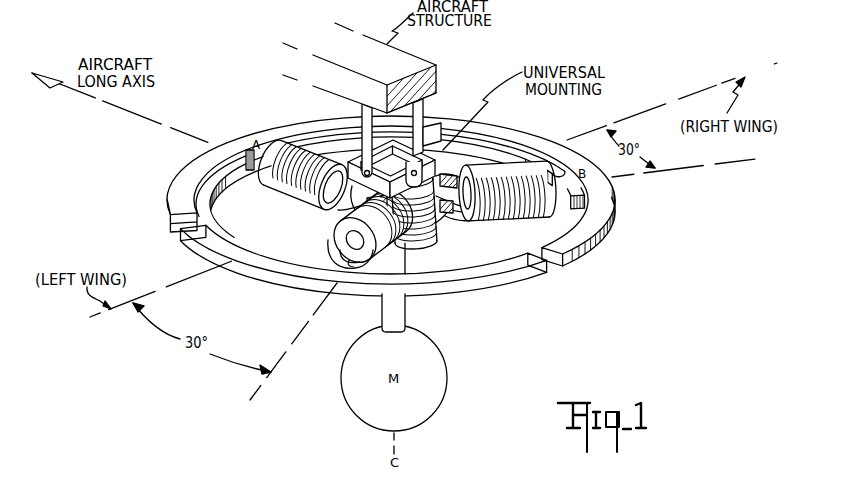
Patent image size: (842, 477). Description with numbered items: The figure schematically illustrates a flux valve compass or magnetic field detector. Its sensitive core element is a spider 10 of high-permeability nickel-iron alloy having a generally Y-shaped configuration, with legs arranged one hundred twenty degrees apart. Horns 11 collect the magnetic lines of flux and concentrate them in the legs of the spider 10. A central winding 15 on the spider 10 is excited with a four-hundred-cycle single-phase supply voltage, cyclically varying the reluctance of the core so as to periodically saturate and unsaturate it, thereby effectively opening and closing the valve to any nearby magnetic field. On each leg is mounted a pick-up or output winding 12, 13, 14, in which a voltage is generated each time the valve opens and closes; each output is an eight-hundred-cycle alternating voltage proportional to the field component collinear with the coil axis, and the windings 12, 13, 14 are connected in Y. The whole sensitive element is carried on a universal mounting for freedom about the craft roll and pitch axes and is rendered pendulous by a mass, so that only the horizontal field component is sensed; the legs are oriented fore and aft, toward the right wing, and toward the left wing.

The spider 10 is at (452, 225).
The horns 11 is at (173, 176).
The pick-up winding 12 is at (260, 185).
The pick-up winding 13 is at (500, 163).
The pick-up winding 14 is at (333, 237).
The central winding 15 is at (427, 240).